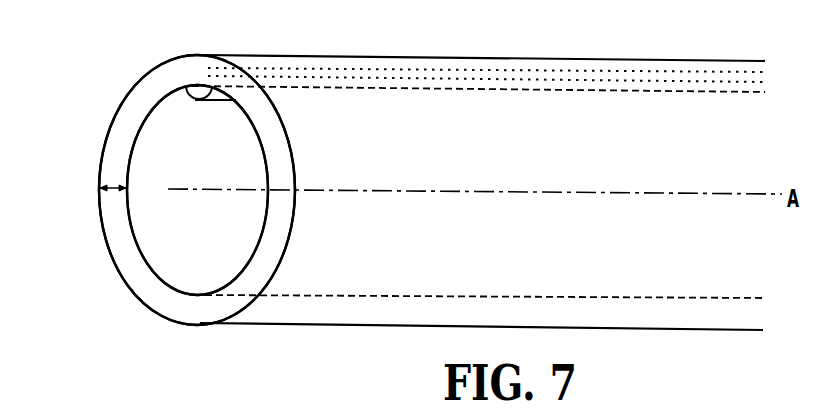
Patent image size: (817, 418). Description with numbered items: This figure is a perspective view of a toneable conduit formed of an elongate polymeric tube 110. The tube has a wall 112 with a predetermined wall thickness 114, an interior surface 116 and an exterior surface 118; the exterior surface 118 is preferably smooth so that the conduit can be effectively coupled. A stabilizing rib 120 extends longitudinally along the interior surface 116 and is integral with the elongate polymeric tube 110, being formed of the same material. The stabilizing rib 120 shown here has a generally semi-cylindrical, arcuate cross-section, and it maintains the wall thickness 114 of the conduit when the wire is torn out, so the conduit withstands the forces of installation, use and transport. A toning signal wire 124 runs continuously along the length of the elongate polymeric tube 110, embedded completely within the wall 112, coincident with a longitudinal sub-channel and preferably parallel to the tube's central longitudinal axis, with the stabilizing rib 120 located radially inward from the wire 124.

The elongate polymeric tube 110 is at (667, 332).
The wall 112 is at (246, 278).
The wall thickness 114 is at (108, 190).
The interior surface 116 is at (143, 250).
The exterior surface 118 is at (148, 308).
The stabilizing rib 120 is at (187, 87).
The toning signal wire 124 is at (207, 65).